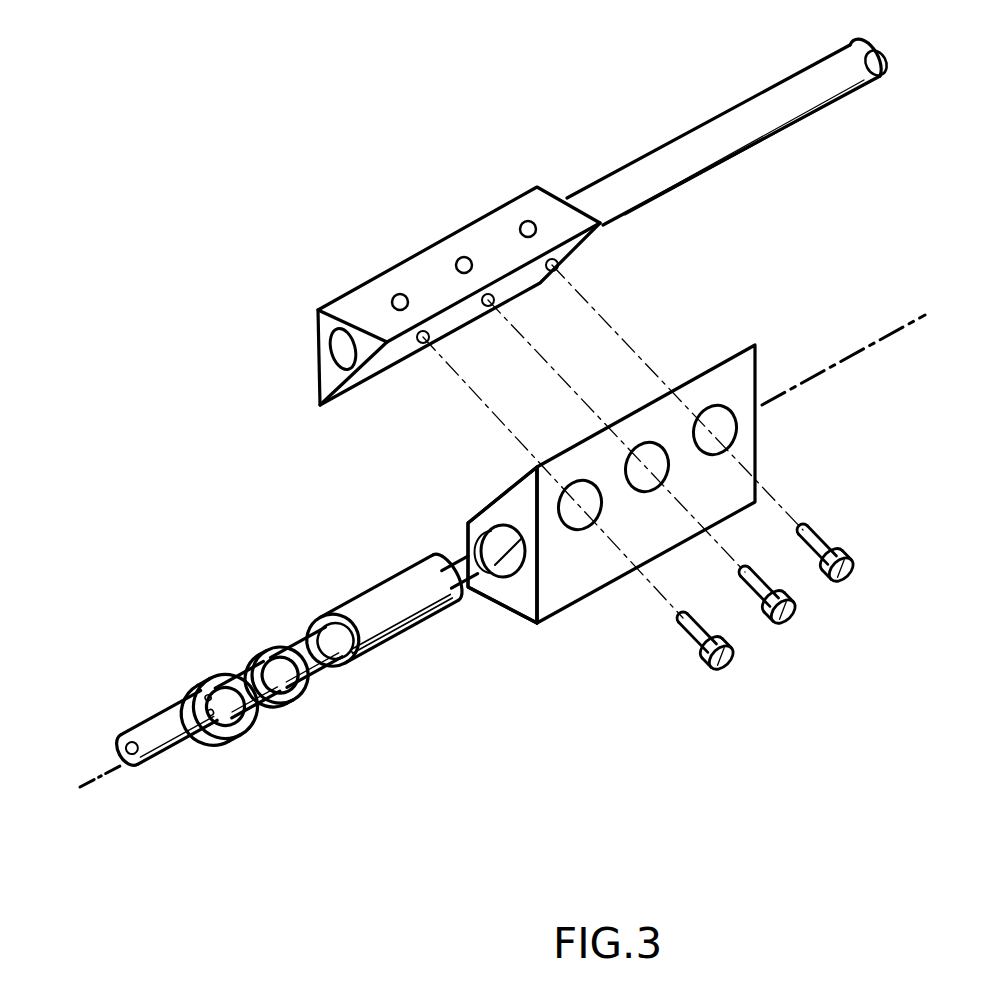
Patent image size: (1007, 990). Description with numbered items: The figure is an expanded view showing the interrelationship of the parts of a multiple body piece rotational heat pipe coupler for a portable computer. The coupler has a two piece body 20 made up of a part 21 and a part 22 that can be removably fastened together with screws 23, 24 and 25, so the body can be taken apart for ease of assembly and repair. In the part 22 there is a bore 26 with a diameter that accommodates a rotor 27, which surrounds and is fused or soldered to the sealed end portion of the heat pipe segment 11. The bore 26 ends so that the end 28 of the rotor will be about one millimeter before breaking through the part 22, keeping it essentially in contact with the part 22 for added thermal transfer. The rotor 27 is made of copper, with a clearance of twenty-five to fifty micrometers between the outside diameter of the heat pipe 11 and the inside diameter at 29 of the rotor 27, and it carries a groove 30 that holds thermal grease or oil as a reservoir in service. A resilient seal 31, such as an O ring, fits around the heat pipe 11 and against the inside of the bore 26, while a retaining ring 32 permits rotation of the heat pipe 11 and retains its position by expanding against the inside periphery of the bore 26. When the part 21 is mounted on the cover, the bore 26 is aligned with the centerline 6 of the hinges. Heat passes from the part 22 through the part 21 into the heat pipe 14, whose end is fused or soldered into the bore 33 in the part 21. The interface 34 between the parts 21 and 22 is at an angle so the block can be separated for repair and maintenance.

The centerline 6 is at (840, 360).
The heat pipe segment 11 is at (167, 725).
The heat pipe 14 is at (733, 115).
The body 20 is at (266, 485).
The part 21 is at (336, 304).
The part 22 is at (583, 583).
The screw 23 is at (713, 667).
The screw 24 is at (785, 622).
The screw 25 is at (845, 578).
The bore 26 is at (468, 528).
The rotor 27 is at (360, 607).
The end of the rotor 28 is at (456, 563).
The inside diameter of the rotor 29 is at (297, 700).
The groove 30 is at (412, 632).
The resilient seal 31 is at (282, 650).
The retaining ring 32 is at (230, 683).
The bore 33 is at (330, 345).
The interface 34 is at (398, 355).